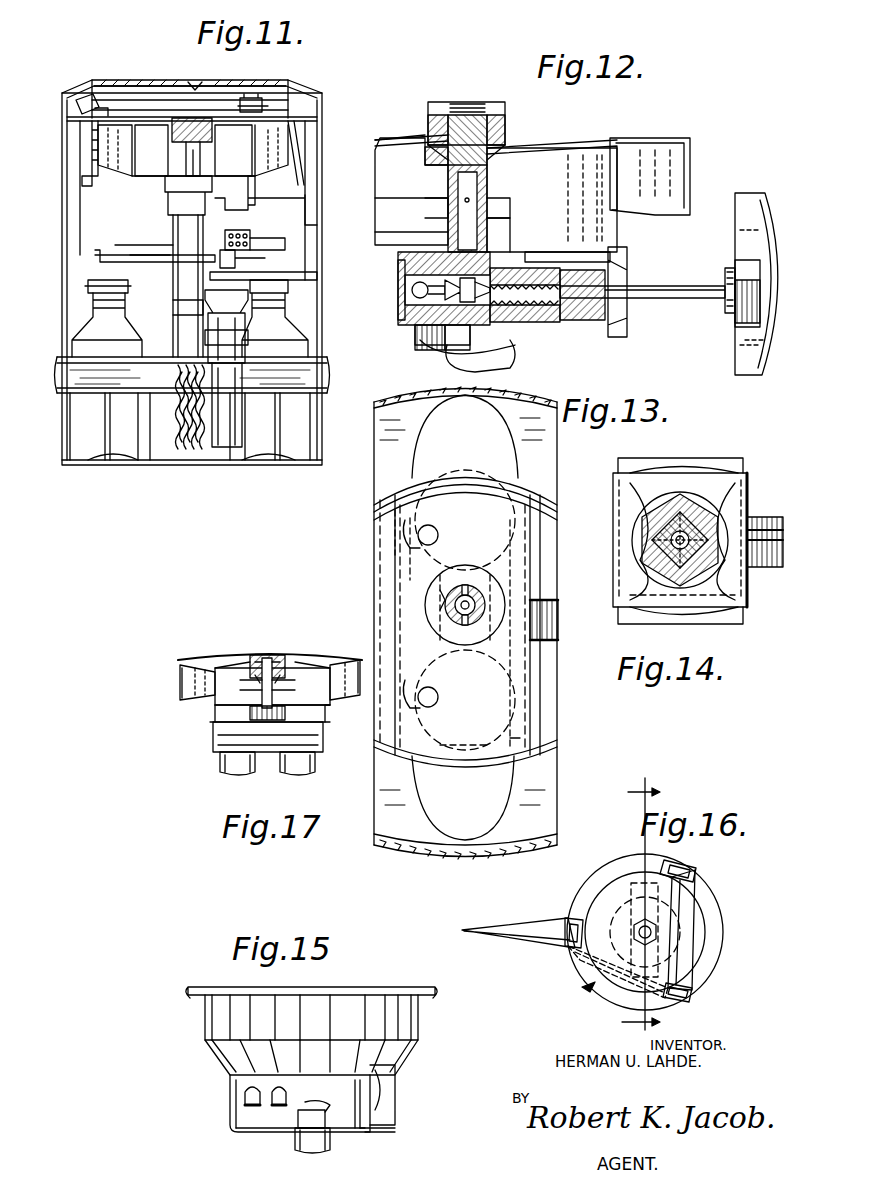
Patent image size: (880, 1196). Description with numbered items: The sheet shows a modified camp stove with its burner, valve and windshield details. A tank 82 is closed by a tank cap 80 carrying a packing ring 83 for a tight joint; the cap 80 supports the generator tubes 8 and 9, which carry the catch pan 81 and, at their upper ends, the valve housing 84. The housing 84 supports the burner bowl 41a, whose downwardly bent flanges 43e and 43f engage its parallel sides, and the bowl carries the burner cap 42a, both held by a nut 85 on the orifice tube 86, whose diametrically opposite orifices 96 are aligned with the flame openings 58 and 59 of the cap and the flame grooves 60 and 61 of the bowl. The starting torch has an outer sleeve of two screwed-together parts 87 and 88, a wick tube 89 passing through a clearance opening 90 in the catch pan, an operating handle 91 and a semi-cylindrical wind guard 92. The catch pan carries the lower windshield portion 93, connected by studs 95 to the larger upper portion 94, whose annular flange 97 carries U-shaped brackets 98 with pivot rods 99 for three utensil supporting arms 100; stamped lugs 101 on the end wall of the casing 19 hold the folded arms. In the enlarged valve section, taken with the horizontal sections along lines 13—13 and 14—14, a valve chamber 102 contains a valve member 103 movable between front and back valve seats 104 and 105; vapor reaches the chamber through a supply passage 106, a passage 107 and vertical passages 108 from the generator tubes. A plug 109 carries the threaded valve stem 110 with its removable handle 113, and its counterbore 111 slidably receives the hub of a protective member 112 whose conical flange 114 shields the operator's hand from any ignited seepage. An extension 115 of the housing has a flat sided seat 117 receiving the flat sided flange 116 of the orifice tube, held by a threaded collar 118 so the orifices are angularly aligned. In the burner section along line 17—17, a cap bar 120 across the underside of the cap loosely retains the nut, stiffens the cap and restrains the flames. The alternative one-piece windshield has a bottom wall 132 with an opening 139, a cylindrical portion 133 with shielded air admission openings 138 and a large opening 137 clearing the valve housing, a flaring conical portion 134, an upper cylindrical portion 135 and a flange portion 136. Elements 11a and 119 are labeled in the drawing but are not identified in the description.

In FIG. 11, the generator tube 8 is at (173, 308).
In FIG. 12, the generator tube 8 is at (515, 348).
In FIG. 13, the generator tube 8 is at (545, 505).
In FIG. 14, the generator tube 8 is at (722, 448).
In FIG. 17, the generator tube 8 is at (222, 762).
In FIG. 15, the generator tube 8 is at (295, 1145).
In FIG. 13, the generator tube 9 is at (530, 718).
In FIG. 14, the generator tube 9 is at (722, 630).
In FIG. 17, the generator tube 9 is at (316, 764).
In FIG. 12, the section line 11a is at (522, 222).
In FIG. 12, the section line 13 is at (396, 205).
In FIG. 12, the section line 14 is at (430, 232).
In FIG. 16, the section line 17 is at (654, 902).
In FIG. 11, the casing 19 is at (105, 228).
In FIG. 11, the burner bowl 41a is at (102, 150).
In FIG. 12, the burner bowl 41a is at (692, 168).
In FIG. 13, the burner bowl 41a is at (557, 820).
In FIG. 17, the burner bowl 41a is at (195, 668).
In FIG. 16, the burner bowl 41a is at (706, 930).
In FIG. 11, the burner cap 42a is at (112, 168).
In FIG. 12, the burner cap 42a is at (610, 165).
In FIG. 13, the burner cap 42a is at (510, 758).
In FIG. 14, the burner cap 42a is at (735, 492).
In FIG. 17, the burner cap 42a is at (325, 668).
In FIG. 16, the burner cap 42a is at (620, 900).
In FIG. 11, the flange 43e is at (166, 197).
In FIG. 12, the flange 43e is at (410, 325).
In FIG. 13, the flange 43e is at (398, 540).
In FIG. 14, the flange 43e is at (670, 570).
In FIG. 13, the flange 43f is at (530, 690).
In FIG. 14, the flange 43f is at (755, 473).
In FIG. 17, the flange 43f is at (215, 722).
In FIG. 13, the flame opening 58 is at (510, 472).
In FIG. 17, the flame opening 58 is at (215, 705).
In FIG. 13, the flame opening 59 is at (505, 760).
In FIG. 17, the flame opening 59 is at (335, 672).
In FIG. 13, the flame groove 60 is at (500, 448).
In FIG. 17, the flame groove 60 is at (190, 695).
In FIG. 13, the flame groove 61 is at (485, 812).
In FIG. 17, the flame groove 61 is at (332, 705).
In FIG. 11, the tank cap 80 is at (160, 345).
In FIG. 11, the catch pan 81 is at (144, 263).
In FIG. 11, the tank 82 is at (62, 432).
In FIG. 11, the packing ring 83 is at (90, 284).
In FIG. 11, the valve housing 84 is at (172, 218).
In FIG. 12, the valve housing 84 is at (405, 330).
In FIG. 13, the valve housing 84 is at (520, 540).
In FIG. 14, the valve housing 84 is at (738, 616).
In FIG. 17, the valve housing 84 is at (323, 740).
In FIG. 11, the nut 85 is at (182, 116).
In FIG. 12, the nut 85 is at (498, 127).
In FIG. 17, the nut 85 is at (285, 662).
In FIG. 16, the nut 85 is at (636, 932).
In FIG. 11, the orifice tube 86 is at (202, 145).
In FIG. 12, the orifice tube 86 is at (500, 178).
In FIG. 13, the orifice tube 86 is at (475, 620).
In FIG. 17, the orifice tube 86 is at (262, 657).
In FIG. 16, the orifice tube 86 is at (650, 943).
In FIG. 11, the sleeve part 87 is at (205, 332).
In FIG. 11, the sleeve part 88 is at (242, 412).
In FIG. 11, the wick tube 89 is at (236, 230).
In FIG. 11, the clearance opening 90 is at (255, 261).
In FIG. 11, the operating handle 91 is at (302, 278).
In FIG. 11, the wind guard 92 is at (262, 240).
In FIG. 11, the lower cylindrical portion 93 is at (100, 240).
In FIG. 11, the upper cylindrical portion 94 is at (92, 136).
In FIG. 11, the studs 95 is at (90, 182).
In FIG. 11, the orifices 96 is at (202, 157).
In FIG. 13, the orifices 96 is at (466, 585).
In FIG. 17, the orifices 96 is at (258, 684).
In FIG. 11, the annular flange 97 is at (320, 129).
In FIG. 16, the annular flange 97 is at (710, 906).
In FIG. 11, the U-shaped brackets 98 is at (70, 95).
In FIG. 16, the U-shaped brackets 98 is at (695, 866).
In FIG. 11, the pivot rods 99 is at (93, 98).
In FIG. 16, the pivot rods 99 is at (690, 875).
In FIG. 11, the utensil supporting arm 100 is at (140, 105).
In FIG. 16, the utensil supporting arm 100 is at (680, 893).
In FIG. 11, the stamped lugs 101 is at (220, 80).
In FIG. 12, the valve chamber 102 is at (440, 345).
In FIG. 12, the valve member 103 is at (470, 350).
In FIG. 12, the front valve seat 104 is at (410, 345).
In FIG. 12, the back valve seat 105 is at (489, 364).
In FIG. 12, the supply passage 106 is at (412, 290).
In FIG. 13, the supply passage 106 is at (400, 586).
In FIG. 12, the passage 107 is at (405, 308).
In FIG. 13, the passage 107 is at (400, 563).
In FIG. 12, the vertical passages 108 is at (398, 340).
In FIG. 13, the vertical passages 108 is at (446, 697).
In FIG. 12, the plug 109 is at (535, 325).
In FIG. 13, the plug 109 is at (548, 645).
In FIG. 14, the plug 109 is at (780, 508).
In FIG. 11, the valve stem 110 is at (285, 198).
In FIG. 12, the valve stem 110 is at (660, 300).
In FIG. 12, the counterbore 111 is at (567, 254).
In FIG. 12, the protective member 112 is at (630, 276).
In FIG. 12, the handle 113 is at (735, 340).
In FIG. 12, the conical flange 114 is at (622, 260).
In FIG. 12, the extension 115 is at (511, 235).
In FIG. 14, the extension 115 is at (645, 551).
In FIG. 12, the flat sided flange 116 is at (434, 208).
In FIG. 14, the flat sided flange 116 is at (725, 588).
In FIG. 12, the flat sided seat 117 is at (405, 265).
In FIG. 14, the flat sided seat 117 is at (700, 560).
In FIG. 14, the threaded collar 118 is at (640, 570).
In FIG. 17, the threaded collar 118 is at (285, 712).
In FIG. 12, the passage 119 is at (501, 208).
In FIG. 12, the cap bar 120 is at (411, 190).
In FIG. 17, the cap bar 120 is at (228, 655).
In FIG. 16, the cap bar 120 is at (633, 880).
In FIG. 15, the bottom wall 132 is at (240, 1130).
In FIG. 15, the cylindrical portion 133 is at (230, 1115).
In FIG. 15, the conical portion 134 is at (212, 1048).
In FIG. 15, the cylindrical portion 135 is at (420, 1018).
In FIG. 15, the flange portion 136 is at (432, 998).
In FIG. 15, the large opening 137 is at (380, 1092).
In FIG. 15, the air admission openings 138 is at (240, 1100).
In FIG. 15, the opening 139 is at (350, 1135).